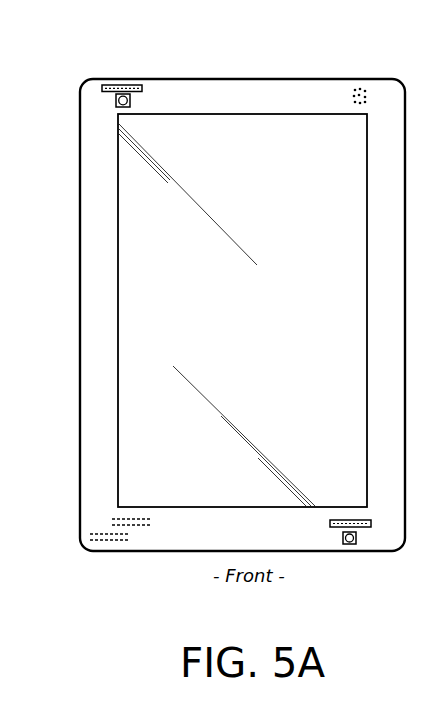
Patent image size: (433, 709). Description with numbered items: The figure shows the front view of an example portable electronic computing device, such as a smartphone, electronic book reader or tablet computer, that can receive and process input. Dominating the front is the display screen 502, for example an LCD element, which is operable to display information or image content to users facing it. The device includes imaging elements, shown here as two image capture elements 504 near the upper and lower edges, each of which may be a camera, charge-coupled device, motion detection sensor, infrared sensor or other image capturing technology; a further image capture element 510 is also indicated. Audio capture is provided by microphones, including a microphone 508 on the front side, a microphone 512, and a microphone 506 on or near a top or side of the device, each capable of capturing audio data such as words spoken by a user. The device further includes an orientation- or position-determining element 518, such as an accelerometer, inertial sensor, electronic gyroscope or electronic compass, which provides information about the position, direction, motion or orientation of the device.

The display screen 502 is at (117, 229).
The image capture element 504 is at (114, 101).
The microphone 506 is at (132, 85).
The microphone 508 is at (364, 528).
The image capture element 510 is at (359, 90).
The microphone 512 is at (129, 526).
The orientation- or position-determining element 518 is at (108, 541).